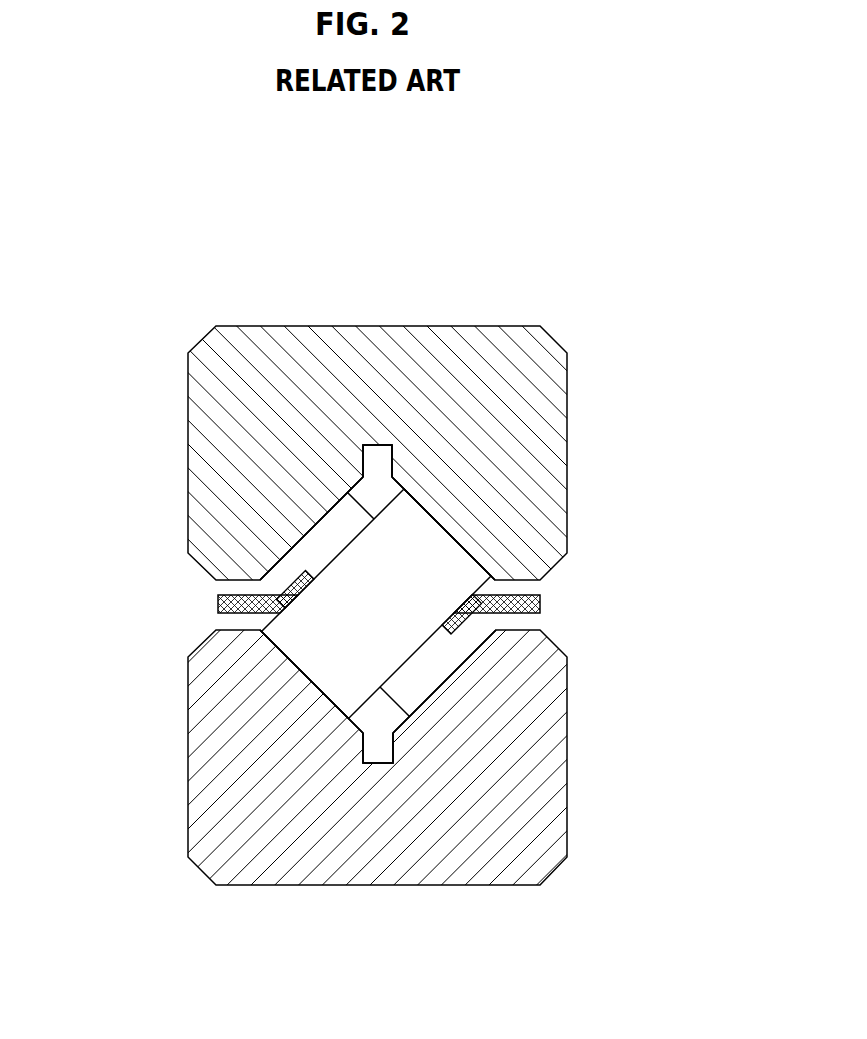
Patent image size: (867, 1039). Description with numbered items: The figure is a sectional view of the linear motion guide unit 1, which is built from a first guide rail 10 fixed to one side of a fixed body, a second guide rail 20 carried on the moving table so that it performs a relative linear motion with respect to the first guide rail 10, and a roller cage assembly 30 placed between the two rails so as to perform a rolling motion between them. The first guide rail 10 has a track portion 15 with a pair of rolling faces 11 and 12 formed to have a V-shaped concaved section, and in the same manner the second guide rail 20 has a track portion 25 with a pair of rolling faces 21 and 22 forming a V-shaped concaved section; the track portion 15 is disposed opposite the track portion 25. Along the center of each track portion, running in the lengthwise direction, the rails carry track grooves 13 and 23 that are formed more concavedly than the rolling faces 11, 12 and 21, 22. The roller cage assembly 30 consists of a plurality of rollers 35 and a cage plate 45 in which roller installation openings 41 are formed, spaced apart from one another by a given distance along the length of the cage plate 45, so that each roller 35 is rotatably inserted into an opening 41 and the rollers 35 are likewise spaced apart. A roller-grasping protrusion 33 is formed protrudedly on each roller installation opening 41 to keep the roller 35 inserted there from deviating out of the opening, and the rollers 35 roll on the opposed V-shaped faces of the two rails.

The linear motion guide unit 1 is at (642, 251).
The first guide rail 10 is at (222, 778).
The rolling face 11 is at (392, 757).
The rolling face 12 is at (360, 757).
The track groove 13 is at (397, 752).
The track portion 15 is at (308, 975).
The second guide rail 20 is at (225, 452).
The rolling face 21 is at (381, 470).
The rolling face 22 is at (362, 472).
The track groove 23 is at (395, 454).
The track portion 25 is at (433, 236).
The roller cage assembly 30 is at (210, 603).
The roller-grasping protrusion 33 is at (297, 587).
The roller 35 is at (436, 553).
The roller installation opening 41 is at (560, 609).
The cage plate 45 is at (244, 614).